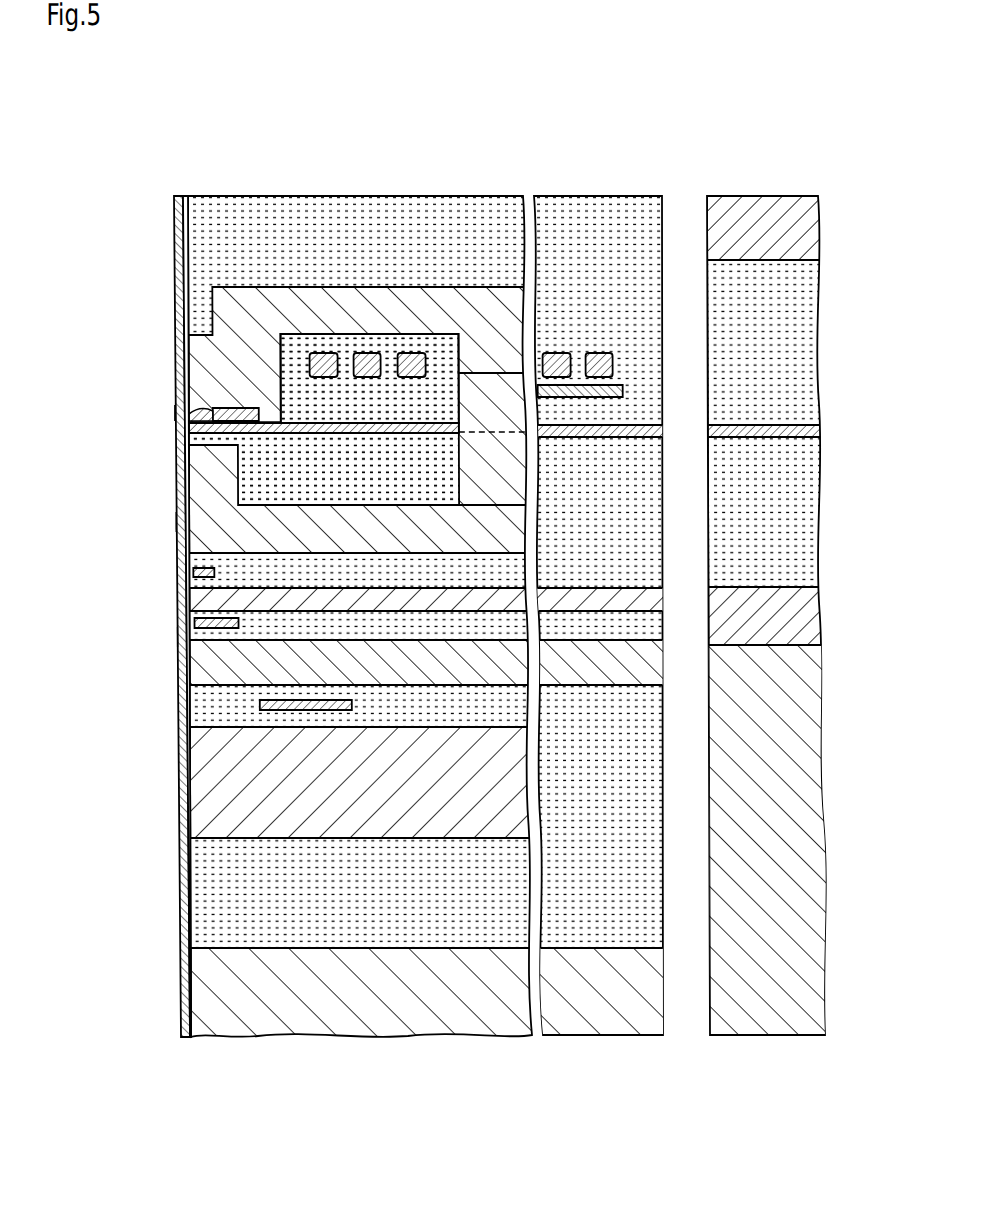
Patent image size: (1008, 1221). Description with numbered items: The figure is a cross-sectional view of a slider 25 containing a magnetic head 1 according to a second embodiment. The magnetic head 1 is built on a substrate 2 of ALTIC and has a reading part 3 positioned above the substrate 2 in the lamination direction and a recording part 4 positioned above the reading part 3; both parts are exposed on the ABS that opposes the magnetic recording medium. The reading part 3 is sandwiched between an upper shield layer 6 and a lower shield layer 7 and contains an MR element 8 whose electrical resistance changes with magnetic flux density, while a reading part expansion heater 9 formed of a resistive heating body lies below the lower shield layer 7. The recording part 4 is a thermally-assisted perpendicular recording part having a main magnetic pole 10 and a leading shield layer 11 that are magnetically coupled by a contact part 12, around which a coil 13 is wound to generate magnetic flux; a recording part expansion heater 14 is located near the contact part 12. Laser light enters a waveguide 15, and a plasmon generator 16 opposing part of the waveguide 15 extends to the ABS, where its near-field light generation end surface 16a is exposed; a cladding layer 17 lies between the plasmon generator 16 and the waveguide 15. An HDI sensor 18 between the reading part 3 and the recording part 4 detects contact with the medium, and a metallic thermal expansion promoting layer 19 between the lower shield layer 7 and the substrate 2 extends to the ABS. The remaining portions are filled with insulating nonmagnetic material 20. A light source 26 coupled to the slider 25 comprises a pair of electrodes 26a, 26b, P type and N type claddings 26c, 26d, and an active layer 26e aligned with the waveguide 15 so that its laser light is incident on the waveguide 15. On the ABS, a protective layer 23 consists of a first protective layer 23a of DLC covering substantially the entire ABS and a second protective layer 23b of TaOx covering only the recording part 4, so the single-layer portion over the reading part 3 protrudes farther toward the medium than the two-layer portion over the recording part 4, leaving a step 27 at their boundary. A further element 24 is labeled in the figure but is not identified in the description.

The magnetic head 1 is at (157, 308).
The substrate 2 is at (283, 1035).
The reading part 3 is at (180, 637).
The recording part 4 is at (157, 413).
The upper shield layer 6 is at (195, 600).
The lower shield layer 7 is at (200, 665).
The MR element 8 is at (200, 625).
The reading part expansion heater 9 is at (258, 706).
The main magnetic pole 10 is at (257, 300).
The leading shield layer 11 is at (200, 492).
The contact part 12 is at (497, 380).
The coil 13 is at (323, 352).
The recording part expansion heater 14 is at (620, 393).
The waveguide 15 is at (196, 430).
The plasmon generator 16 is at (216, 410).
The near-field light generation end surface 16a is at (185, 418).
The cladding layer 17 is at (178, 433).
The HDI sensor 18 is at (200, 572).
The thermal expansion promoting layer 19 is at (197, 795).
The insulating nonmagnetic material 20 is at (640, 303).
The protective layer 23 is at (161, 563).
The first protective layer 23a is at (176, 196).
The second protective layer 23b is at (186, 196).
The auxiliary magnetic layer 24 is at (205, 409).
The slider 25 is at (398, 140).
The light source 26 is at (785, 557).
The electrode 26a is at (814, 238).
The electrode 26b is at (812, 625).
The P type cladding 26c is at (812, 358).
The N type cladding 26d is at (812, 538).
The active layer 26e is at (814, 430).
The step 27 is at (177, 522).
The element ABS is at (183, 1010).